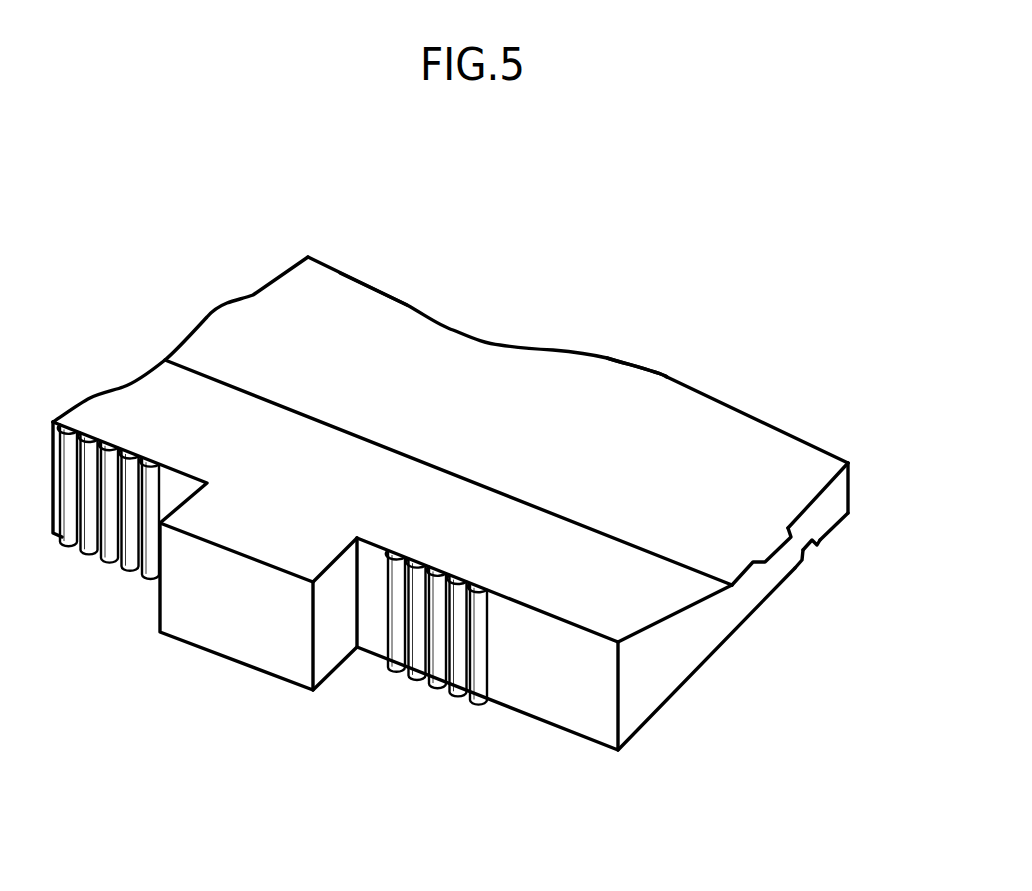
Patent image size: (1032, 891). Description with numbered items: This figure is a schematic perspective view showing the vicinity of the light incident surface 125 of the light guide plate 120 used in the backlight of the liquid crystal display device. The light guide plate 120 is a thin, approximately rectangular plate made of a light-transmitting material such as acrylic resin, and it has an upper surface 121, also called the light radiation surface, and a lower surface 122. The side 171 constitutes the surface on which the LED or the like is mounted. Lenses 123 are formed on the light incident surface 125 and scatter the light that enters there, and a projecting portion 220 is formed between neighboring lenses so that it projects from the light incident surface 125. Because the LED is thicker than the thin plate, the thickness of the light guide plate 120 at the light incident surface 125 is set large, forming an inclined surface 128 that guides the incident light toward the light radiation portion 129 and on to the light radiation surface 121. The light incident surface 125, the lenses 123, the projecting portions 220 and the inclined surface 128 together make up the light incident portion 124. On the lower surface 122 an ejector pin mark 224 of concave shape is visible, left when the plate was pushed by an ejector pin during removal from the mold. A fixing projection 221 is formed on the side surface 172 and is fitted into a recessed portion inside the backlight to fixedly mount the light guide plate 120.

The light guide plate 120 is at (313, 715).
The upper surface 121 is at (508, 377).
The lower surface 122 is at (793, 583).
The lenses 123 is at (415, 663).
The light incident portion 124 is at (650, 665).
The light incident surface 125 is at (447, 577).
The inclined surface 128 is at (362, 480).
The light radiation portion 129 is at (630, 390).
The side 171 is at (562, 678).
The side surface 172 is at (807, 527).
The projecting portion 220 is at (227, 620).
The fixing projection 221 is at (768, 550).
The ejector pin mark 224 is at (810, 553).